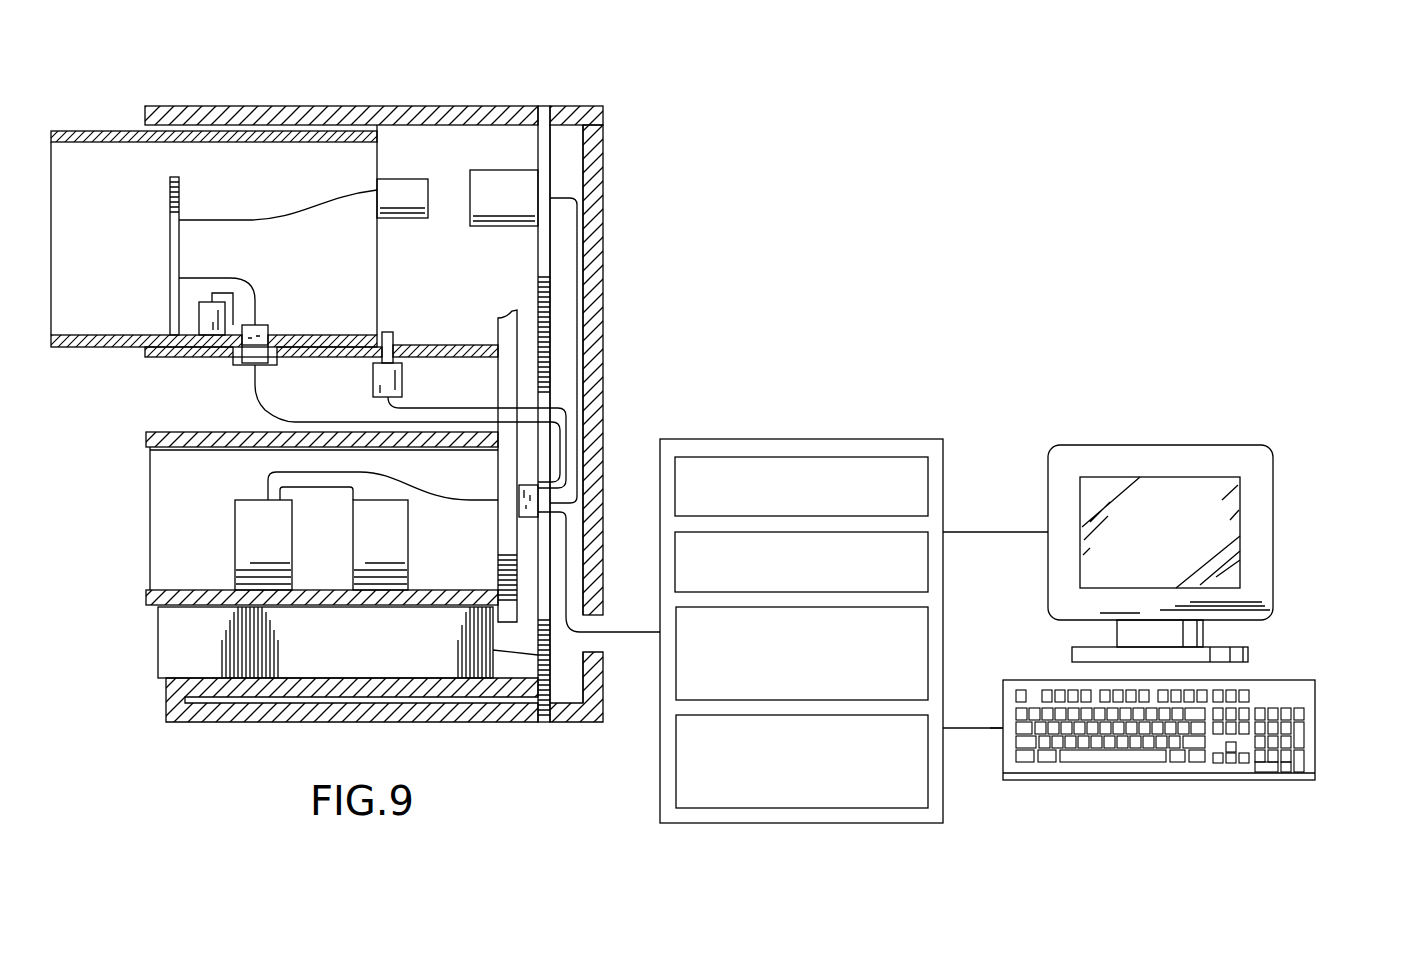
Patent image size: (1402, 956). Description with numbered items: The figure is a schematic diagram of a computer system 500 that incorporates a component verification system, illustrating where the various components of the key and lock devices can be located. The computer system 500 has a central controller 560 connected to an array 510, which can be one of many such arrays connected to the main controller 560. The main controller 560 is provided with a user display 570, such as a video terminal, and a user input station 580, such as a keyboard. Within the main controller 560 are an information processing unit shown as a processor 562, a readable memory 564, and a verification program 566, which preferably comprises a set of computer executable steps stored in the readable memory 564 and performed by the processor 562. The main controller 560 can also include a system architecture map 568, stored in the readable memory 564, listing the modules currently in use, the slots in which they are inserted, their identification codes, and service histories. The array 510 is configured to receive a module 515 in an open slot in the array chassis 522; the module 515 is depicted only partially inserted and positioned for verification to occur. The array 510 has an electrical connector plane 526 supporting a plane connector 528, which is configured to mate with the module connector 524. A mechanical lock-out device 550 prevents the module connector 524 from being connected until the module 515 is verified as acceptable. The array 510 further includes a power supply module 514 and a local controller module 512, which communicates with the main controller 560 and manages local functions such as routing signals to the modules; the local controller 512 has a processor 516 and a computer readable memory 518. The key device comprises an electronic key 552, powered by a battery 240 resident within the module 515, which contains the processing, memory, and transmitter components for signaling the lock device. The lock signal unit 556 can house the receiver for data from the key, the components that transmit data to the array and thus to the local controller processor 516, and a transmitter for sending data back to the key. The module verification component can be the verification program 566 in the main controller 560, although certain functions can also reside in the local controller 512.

The computer system 500 is at (918, 150).
The array 510 is at (404, 60).
The local controller module 512 is at (150, 516).
The power supply module 514 is at (158, 642).
The module 515 is at (97, 131).
The processor 516 is at (235, 548).
The computer readable memory 518 is at (410, 515).
The array chassis 522 is at (509, 106).
The module connector 524 is at (403, 218).
The electrical connector plane 526 is at (537, 144).
The plane connector 528 is at (505, 226).
The battery 240 is at (199, 318).
The mechanical lock-out device 550 is at (373, 387).
The electronic key 552 is at (268, 328).
The lock signal unit 556 is at (238, 370).
The central controller 560 is at (832, 430).
The processor 562 is at (928, 487).
The readable memory 564 is at (928, 567).
The verification program 566 is at (928, 645).
The system architecture map 568 is at (676, 767).
The user display 570 is at (1127, 445).
The user input station 580 is at (1315, 728).